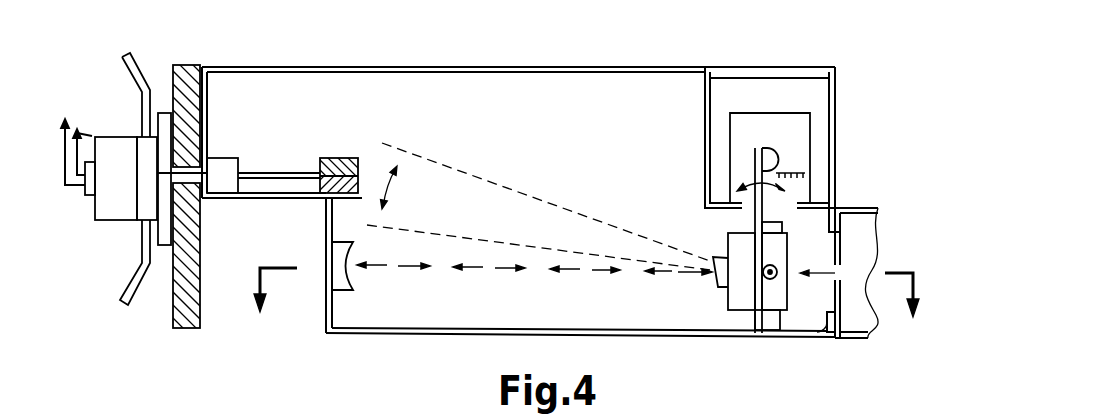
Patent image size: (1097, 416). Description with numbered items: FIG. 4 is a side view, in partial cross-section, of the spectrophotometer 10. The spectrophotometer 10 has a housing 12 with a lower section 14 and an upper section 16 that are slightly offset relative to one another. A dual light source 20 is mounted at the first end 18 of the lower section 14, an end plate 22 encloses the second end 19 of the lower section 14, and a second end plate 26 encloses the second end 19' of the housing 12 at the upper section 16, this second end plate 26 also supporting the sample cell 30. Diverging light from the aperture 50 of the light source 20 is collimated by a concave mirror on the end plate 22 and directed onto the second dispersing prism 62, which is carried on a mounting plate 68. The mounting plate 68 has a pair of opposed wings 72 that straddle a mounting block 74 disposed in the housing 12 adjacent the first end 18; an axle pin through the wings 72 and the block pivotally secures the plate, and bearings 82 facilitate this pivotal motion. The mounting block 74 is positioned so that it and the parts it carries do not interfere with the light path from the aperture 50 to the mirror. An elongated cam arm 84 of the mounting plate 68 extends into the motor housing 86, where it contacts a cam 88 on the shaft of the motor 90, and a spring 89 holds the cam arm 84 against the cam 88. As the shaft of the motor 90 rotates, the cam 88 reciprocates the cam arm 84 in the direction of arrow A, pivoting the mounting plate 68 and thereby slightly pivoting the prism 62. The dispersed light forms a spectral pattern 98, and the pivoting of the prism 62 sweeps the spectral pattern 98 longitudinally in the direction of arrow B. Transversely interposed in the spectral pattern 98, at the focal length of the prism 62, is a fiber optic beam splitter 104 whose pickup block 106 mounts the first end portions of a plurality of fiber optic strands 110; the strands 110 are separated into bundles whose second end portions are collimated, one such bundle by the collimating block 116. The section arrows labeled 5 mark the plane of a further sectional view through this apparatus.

The spectrophotometer 10 is at (601, 52).
The housing 12 is at (382, 50).
The lower section 14 is at (583, 337).
The upper section 16 is at (467, 67).
The first end 18 is at (813, 330).
The second end 19 is at (379, 305).
The second end 19' is at (262, 113).
The dual light source 20 is at (870, 208).
The end plate 22 is at (326, 318).
The second end plate 26 is at (175, 72).
The sample cell 30 is at (145, 151).
The aperture 50 is at (838, 284).
The second dispersing prism 62 is at (725, 262).
The mounting plate 68 is at (737, 298).
The wings 72 is at (785, 303).
The mounting block 74 is at (763, 325).
The bearings 82 is at (773, 264).
The cam arm 84 is at (763, 207).
The motor housing 86 is at (728, 72).
The cam 88 is at (778, 152).
The spring 89 is at (793, 172).
The motor 90 is at (753, 123).
The spectral pattern 98 is at (517, 192).
The fiber optic beam splitter 104 is at (326, 137).
The pickup block 106 is at (347, 158).
The fiber optic strands 110 is at (252, 173).
The collimating block 116 is at (220, 158).
The arrow A is at (753, 163).
The translation direction B is at (388, 187).
The section line 5 is at (574, 296).